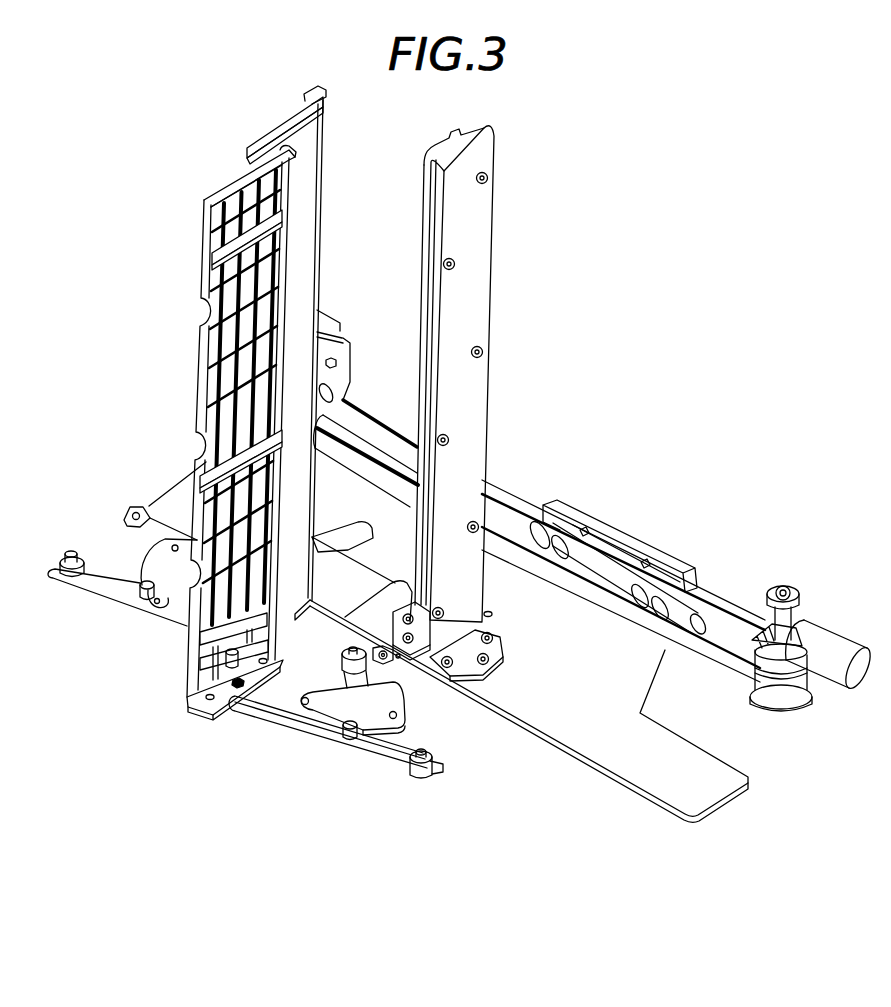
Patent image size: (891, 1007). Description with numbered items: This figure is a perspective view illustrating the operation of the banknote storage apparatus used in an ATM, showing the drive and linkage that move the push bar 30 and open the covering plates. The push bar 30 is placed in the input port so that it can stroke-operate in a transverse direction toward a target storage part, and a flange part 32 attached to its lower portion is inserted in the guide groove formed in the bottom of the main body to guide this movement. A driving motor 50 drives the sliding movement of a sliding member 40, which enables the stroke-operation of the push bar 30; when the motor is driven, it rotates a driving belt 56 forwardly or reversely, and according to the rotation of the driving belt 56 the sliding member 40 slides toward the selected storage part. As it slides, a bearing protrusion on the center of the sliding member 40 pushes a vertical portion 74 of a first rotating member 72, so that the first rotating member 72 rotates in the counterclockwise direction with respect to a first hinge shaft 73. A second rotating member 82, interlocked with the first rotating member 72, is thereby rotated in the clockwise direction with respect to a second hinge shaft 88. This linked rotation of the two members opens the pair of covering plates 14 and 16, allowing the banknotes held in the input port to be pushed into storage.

The covering plate 14 is at (277, 127).
The covering plate 16 is at (207, 318).
The push bar 30 is at (493, 264).
The flange part 32 is at (470, 660).
The sliding member 40 is at (588, 748).
The driving motor 50 is at (850, 645).
The driving belt 56 is at (713, 612).
The first rotating member 72 is at (415, 700).
The first hinge shaft 73 is at (345, 676).
The vertical portion 74 is at (355, 532).
The second rotating member 82 is at (367, 768).
The second hinge shaft 88 is at (66, 555).